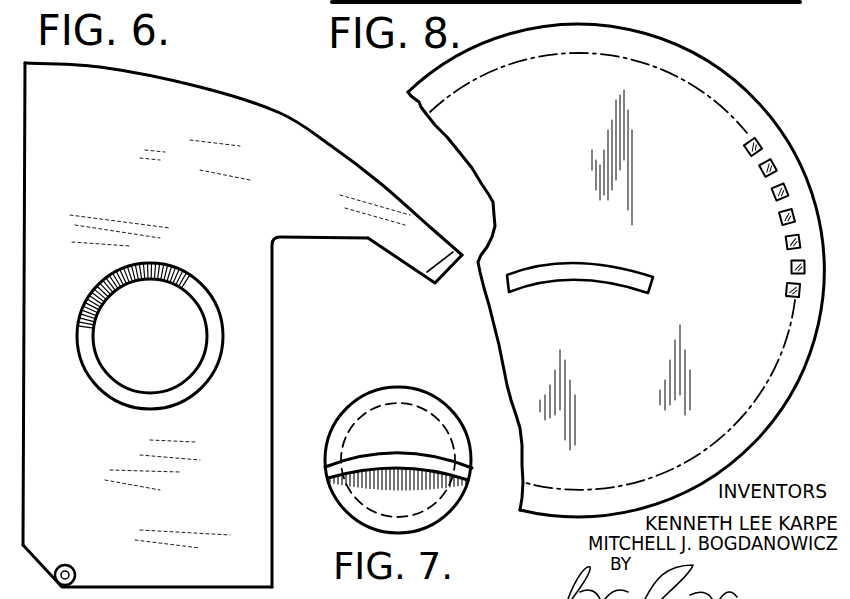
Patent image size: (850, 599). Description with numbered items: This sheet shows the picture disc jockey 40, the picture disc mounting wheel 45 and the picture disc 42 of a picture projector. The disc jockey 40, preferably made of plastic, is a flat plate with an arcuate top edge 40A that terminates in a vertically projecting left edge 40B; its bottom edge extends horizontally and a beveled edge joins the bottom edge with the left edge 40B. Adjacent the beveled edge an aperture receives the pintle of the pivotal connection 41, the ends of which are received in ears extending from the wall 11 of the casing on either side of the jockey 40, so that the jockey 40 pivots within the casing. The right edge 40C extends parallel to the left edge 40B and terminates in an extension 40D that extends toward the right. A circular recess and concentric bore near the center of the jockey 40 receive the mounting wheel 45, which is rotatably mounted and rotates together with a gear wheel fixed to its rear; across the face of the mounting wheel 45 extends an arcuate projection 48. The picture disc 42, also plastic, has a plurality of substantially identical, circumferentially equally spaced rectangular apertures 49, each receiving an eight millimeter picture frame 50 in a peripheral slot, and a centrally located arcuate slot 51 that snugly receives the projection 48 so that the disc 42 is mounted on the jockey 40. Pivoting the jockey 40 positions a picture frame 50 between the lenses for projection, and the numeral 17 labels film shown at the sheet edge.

In FIG. 6, the wall 11 is at (273, 0).
In FIG. 8, the film strip 17 is at (775, 5).
In FIG. 6, the picture disc jockey 40 is at (242, 325).
In FIG. 6, the arcuate top edge 40A is at (137, 70).
In FIG. 6, the left edge 40B is at (23, 413).
In FIG. 6, the right edge 40C is at (271, 403).
In FIG. 6, the extension 40D is at (397, 217).
In FIG. 6, the pivotal connection 41 is at (55, 575).
In FIG. 8, the picture disc 42 is at (759, 101).
In FIG. 7, the picture disc mounting wheel 45 is at (425, 388).
In FIG. 7, the arcuate projection 48 is at (437, 460).
In FIG. 8, the rectangular apertures 49 is at (761, 146).
In FIG. 8, the picture frame 50 is at (780, 218).
In FIG. 8, the arcuate slot 51 is at (588, 277).